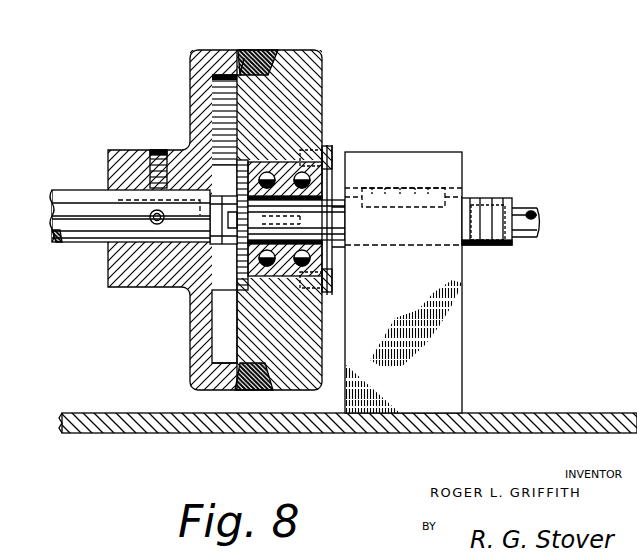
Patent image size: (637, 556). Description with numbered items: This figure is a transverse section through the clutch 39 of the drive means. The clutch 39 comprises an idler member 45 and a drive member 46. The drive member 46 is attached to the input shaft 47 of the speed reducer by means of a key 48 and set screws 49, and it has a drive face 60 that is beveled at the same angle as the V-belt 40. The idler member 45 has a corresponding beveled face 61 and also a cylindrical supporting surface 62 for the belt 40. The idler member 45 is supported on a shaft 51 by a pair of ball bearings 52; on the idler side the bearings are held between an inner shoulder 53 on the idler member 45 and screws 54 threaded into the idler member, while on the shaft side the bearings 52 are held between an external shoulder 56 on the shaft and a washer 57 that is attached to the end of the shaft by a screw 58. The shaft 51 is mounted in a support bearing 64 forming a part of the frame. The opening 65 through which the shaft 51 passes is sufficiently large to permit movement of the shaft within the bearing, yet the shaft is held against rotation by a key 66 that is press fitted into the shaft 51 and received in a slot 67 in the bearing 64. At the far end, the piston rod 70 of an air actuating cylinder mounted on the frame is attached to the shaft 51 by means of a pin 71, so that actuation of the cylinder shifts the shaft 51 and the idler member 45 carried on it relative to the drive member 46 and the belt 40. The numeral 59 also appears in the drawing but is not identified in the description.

The clutch 39 is at (299, 47).
The V-belt 40 is at (255, 55).
The idler member 45 is at (323, 68).
The drive member 46 is at (122, 150).
The input shaft 47 is at (55, 205).
The key 48 is at (118, 200).
The set screws 49 is at (158, 150).
The shaft 51 is at (332, 195).
The ball bearings 52 is at (328, 257).
The inner shoulder 53 is at (242, 278).
The screws 54 is at (328, 148).
The external shoulder 56 is at (345, 211).
The washer 57 is at (296, 220).
The screw 58 is at (240, 215).
The key 59 is at (240, 234).
The drive face 60 is at (238, 70).
The beveled face 61 is at (283, 391).
The cylindrical supporting surface 62 is at (245, 355).
The support bearing 64 is at (412, 152).
The opening 65 is at (448, 245).
The key 66 is at (388, 192).
The slot 67 is at (425, 188).
The piston rod 70 is at (536, 210).
The pin 71 is at (500, 200).